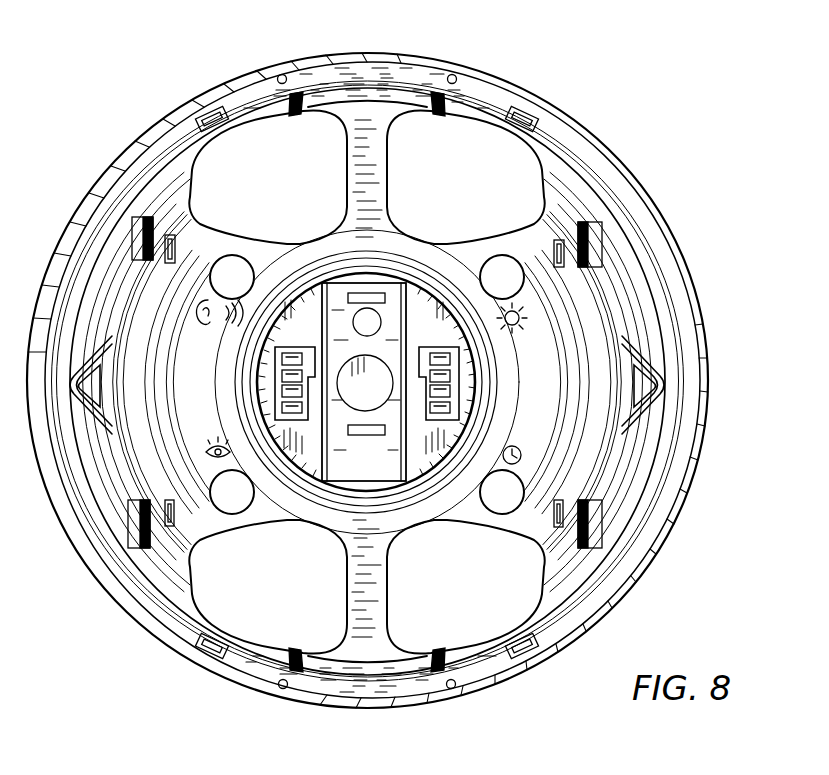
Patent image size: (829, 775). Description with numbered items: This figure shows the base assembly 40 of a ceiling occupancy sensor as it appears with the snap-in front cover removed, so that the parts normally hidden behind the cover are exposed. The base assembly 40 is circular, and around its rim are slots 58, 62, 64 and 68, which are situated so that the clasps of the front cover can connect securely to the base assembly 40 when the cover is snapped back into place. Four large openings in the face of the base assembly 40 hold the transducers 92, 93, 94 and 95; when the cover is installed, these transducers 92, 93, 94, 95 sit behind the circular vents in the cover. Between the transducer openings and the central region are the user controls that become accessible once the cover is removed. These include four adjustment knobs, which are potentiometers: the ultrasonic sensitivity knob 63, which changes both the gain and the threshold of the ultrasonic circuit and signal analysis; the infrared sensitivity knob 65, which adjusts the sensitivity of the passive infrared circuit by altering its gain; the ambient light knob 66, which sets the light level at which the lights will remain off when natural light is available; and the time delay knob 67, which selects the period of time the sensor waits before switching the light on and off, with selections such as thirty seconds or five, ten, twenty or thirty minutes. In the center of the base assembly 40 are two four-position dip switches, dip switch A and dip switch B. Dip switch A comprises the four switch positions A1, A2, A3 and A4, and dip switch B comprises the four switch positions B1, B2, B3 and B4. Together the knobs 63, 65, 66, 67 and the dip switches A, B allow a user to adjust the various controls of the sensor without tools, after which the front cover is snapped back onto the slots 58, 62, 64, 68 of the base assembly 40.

The base assembly 40 is at (53, 101).
The slot 58 is at (514, 110).
The slot 62 is at (592, 238).
The ultrasonic sensitivity knob 63 is at (238, 277).
The slot 64 is at (566, 253).
The infrared sensitivity knob 65 is at (205, 492).
The ambient light knob 66 is at (532, 283).
The time delay knob 67 is at (516, 493).
The slot 68 is at (651, 382).
The transducer 92 is at (263, 598).
The transducer 93 is at (285, 180).
The transducer 94 is at (467, 605).
The transducer 95 is at (497, 192).
The 4-position dip switch A is at (273, 397).
The 4-position dip switch B is at (477, 387).
The dip switch position SW- A1 is at (280, 357).
The dip switch position SW- A2 is at (283, 376).
The dip switch position SW- A3 is at (282, 394).
The dip switch position SW- A4 is at (293, 410).
The dip switch position SW- B1 is at (443, 360).
The dip switch position SW- B2 is at (450, 377).
The dip switch position SW- B3 is at (450, 393).
The dip switch position SW- B4 is at (445, 410).